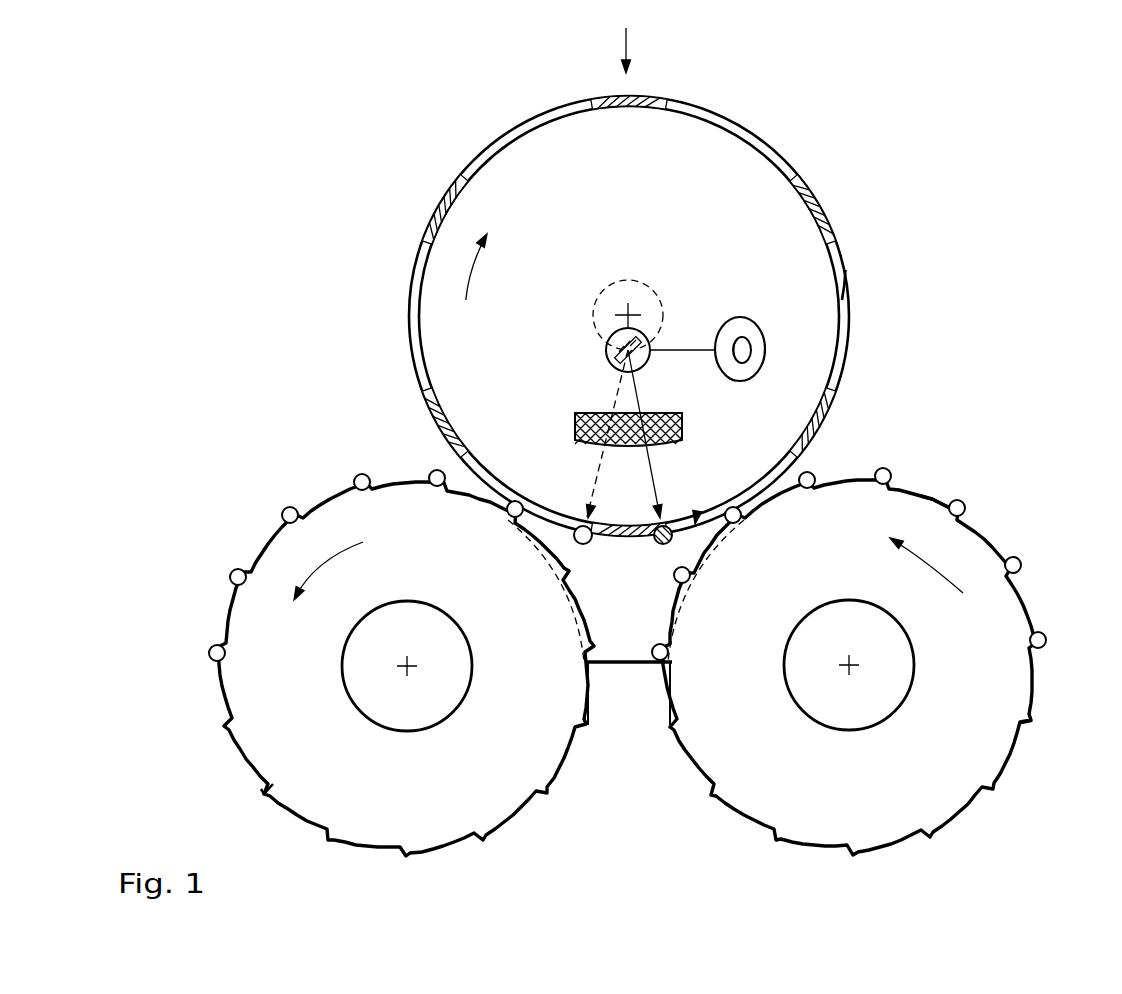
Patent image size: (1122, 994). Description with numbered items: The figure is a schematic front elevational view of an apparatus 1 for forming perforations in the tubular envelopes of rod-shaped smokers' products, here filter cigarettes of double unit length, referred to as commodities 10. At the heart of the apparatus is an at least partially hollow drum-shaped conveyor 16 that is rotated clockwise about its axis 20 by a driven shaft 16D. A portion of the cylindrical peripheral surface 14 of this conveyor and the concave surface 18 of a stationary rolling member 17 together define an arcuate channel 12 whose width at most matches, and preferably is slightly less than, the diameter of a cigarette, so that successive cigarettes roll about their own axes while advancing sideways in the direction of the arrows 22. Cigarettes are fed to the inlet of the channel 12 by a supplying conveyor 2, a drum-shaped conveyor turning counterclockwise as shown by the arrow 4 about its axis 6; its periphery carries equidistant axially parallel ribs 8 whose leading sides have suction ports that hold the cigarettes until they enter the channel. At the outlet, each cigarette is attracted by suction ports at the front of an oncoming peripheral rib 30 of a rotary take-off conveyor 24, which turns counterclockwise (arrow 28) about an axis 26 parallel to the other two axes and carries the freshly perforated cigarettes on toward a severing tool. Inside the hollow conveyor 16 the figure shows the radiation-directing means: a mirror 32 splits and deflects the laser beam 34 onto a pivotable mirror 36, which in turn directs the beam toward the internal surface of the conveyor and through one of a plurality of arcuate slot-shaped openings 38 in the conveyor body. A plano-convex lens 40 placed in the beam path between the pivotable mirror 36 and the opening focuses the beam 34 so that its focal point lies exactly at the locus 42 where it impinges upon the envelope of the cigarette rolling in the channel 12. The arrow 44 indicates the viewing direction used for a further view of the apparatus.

The apparatus 1 is at (296, 125).
The supplying conveyor 2 is at (990, 707).
The arrow 4 is at (945, 565).
The axis 6 is at (858, 658).
The ribs 8 is at (1033, 732).
The commodities 10 is at (288, 508).
The channel 12 is at (628, 540).
The peripheral surface 14 is at (766, 130).
The drum-shaped conveyor 16 is at (800, 160).
The driven shaft 16D is at (627, 278).
The rolling member 17 is at (634, 664).
The concave surface 18 is at (670, 527).
The axis 20 is at (619, 302).
The arrows 22 is at (470, 275).
The take-off conveyor 24 is at (252, 675).
The axis 26 is at (398, 658).
The arrow 28 is at (313, 567).
The peripheral rib 30 is at (265, 795).
The mirror 32 is at (757, 367).
The beam 34 is at (688, 350).
The pivotable mirror 36 is at (606, 348).
The openings 38 is at (838, 282).
The plano-convex lens 40 is at (575, 428).
The locus of impingement 42 is at (696, 512).
The arrow 44 is at (630, 34).